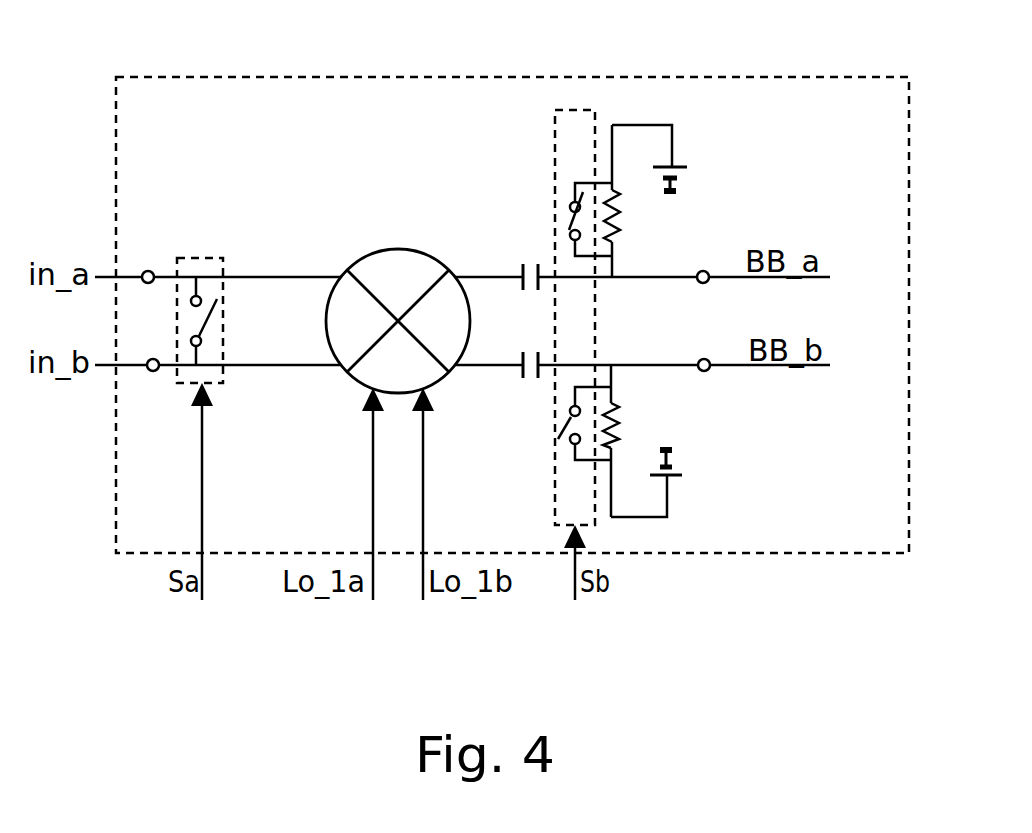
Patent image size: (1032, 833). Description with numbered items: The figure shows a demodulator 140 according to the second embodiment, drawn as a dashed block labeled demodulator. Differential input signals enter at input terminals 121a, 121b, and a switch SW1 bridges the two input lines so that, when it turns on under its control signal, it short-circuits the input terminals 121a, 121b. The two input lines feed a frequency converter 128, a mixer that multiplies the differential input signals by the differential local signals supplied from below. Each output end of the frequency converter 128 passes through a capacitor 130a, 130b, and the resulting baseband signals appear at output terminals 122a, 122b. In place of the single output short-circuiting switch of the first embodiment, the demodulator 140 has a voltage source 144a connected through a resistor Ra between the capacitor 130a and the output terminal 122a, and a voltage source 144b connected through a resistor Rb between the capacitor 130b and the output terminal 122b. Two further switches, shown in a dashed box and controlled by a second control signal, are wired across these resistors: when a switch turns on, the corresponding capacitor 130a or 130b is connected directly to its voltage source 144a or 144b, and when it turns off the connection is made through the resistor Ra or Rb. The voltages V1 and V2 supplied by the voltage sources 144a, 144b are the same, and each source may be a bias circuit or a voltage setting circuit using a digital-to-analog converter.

The demodulator 140 is at (625, 77).
The input terminal 121a is at (149, 270).
The input terminal 121b is at (153, 372).
The switch SW1 is at (195, 258).
The frequency converter 128 is at (367, 252).
The capacitor 130a is at (523, 264).
The capacitor 130b is at (521, 376).
The resistor Ra is at (629, 201).
The resistor Rb is at (629, 441).
The voltage V1 is at (636, 167).
The voltage V2 is at (632, 482).
The voltage source 144a is at (696, 142).
The voltage source 144b is at (699, 501).
The output terminal 122a is at (702, 271).
The output terminal 122b is at (706, 371).